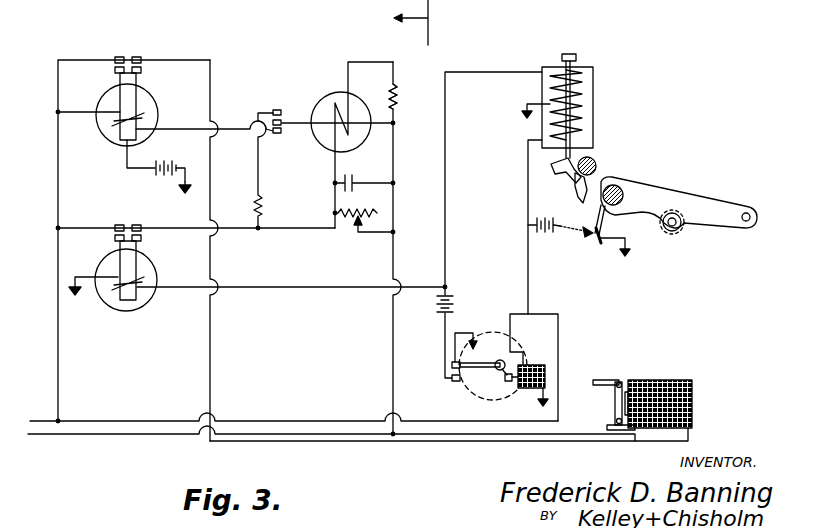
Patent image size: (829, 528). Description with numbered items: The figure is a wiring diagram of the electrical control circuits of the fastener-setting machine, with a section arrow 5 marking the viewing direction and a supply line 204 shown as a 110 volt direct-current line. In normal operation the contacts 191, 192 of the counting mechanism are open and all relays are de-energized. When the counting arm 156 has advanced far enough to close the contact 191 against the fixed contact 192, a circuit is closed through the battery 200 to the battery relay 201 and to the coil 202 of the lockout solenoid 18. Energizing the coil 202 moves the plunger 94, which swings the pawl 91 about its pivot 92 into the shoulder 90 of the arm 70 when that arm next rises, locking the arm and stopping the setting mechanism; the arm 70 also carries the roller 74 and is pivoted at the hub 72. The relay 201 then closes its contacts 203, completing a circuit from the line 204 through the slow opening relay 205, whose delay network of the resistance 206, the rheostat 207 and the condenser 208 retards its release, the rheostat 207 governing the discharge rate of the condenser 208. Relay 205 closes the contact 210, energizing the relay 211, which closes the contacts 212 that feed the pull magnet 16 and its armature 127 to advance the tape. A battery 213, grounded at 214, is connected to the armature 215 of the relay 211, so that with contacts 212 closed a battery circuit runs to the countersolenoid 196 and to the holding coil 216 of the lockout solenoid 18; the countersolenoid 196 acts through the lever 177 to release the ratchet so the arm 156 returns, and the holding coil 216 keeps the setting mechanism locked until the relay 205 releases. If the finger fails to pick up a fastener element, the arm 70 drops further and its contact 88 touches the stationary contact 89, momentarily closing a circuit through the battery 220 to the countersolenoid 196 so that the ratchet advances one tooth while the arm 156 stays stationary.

The volt D. C. line 110 is at (314, 8).
The finger 5 is at (421, 22).
The contacts 212 is at (122, 57).
The armature 215 is at (118, 100).
The relay 211 is at (150, 108).
The battery 213 is at (162, 165).
The ground 214 is at (190, 184).
The contacts 203 is at (122, 228).
The battery relay 201 is at (146, 298).
The contact 210 is at (282, 134).
The slow opening relay 205 is at (328, 100).
The resistance 206 is at (398, 92).
The condenser 208 is at (360, 180).
The rheostat 207 is at (352, 212).
The battery 200 is at (438, 305).
The supply line 204 is at (42, 423).
The coil 202 is at (588, 78).
The lockout solenoid 18 is at (582, 104).
The holding coil 216 is at (574, 128).
The pawl 91 is at (555, 186).
The plunger 94 is at (590, 152).
The pivot 92 is at (596, 170).
The shoulder 90 is at (577, 199).
The pivot hub 72 is at (622, 195).
The arm 70 is at (700, 198).
The roller 74 is at (678, 233).
The contact 88 is at (598, 246).
The battery 220 is at (545, 233).
The stationary contact 89 is at (588, 240).
The arm 156 is at (476, 344).
The contact 191 is at (452, 365).
The fixed contact 192 is at (457, 381).
The lever 177 is at (505, 381).
The countersolenoid 196 is at (540, 365).
The pull magnet 16 is at (660, 380).
The armature 127 is at (614, 404).